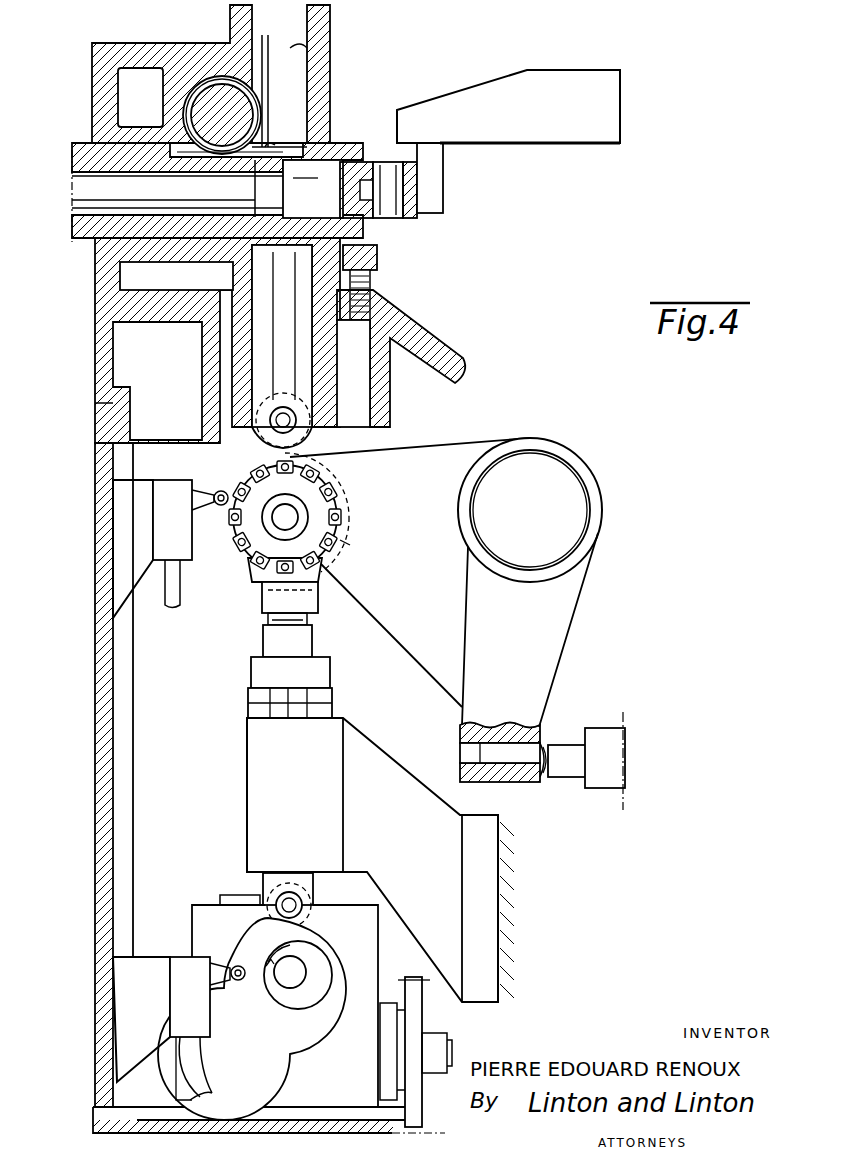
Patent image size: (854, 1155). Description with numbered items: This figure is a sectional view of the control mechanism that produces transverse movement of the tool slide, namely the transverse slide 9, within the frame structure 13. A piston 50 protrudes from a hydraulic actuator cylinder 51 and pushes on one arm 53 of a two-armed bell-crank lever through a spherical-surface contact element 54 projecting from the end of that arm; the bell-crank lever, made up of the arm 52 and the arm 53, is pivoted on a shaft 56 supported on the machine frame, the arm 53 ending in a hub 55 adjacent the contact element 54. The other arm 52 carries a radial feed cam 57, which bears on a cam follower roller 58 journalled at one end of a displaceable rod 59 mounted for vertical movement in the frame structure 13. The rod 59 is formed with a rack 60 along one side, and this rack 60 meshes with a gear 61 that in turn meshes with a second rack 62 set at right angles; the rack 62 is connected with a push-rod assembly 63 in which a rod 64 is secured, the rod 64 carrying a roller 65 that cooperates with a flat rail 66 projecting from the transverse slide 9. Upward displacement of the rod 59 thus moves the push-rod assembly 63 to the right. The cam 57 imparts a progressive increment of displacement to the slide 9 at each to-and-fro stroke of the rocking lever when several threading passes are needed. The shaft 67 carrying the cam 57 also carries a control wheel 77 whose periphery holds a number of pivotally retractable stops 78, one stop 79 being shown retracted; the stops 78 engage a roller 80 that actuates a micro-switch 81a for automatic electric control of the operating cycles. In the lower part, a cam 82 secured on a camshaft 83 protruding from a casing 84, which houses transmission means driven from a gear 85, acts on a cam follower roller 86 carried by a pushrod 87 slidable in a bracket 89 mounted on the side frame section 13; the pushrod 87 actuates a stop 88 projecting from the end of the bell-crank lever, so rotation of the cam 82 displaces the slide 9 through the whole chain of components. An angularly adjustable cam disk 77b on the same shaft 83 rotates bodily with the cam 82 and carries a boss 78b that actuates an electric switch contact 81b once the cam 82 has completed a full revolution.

The transverse slide 9 is at (508, 106).
The frame structure 13 is at (97, 340).
The piston 50 is at (567, 761).
The hydraulic actuator cylinder 51 is at (606, 795).
The bell-crank lever arm 52 is at (445, 462).
The bell-crank lever arm 53 is at (556, 662).
The spherical-surface contact element 54 is at (546, 786).
The hub 55 is at (462, 781).
The shaft 56 is at (530, 510).
The radial feed cam 57 is at (258, 468).
The cam follower roller 58 is at (308, 438).
The displaceable rod 59 is at (282, 346).
The rack 60 is at (270, 70).
The gear 61 is at (205, 78).
The second rack 62 is at (270, 138).
The push-rod assembly 63 is at (72, 157).
The rod 64 is at (72, 196).
The roller 65 is at (378, 192).
The flat rail 66 is at (438, 160).
The shaft 67 is at (285, 522).
The control wheel 77 is at (344, 530).
The pivotally retractable stops 78 is at (343, 495).
The retracted stop 79 is at (330, 470).
The roller 80 is at (220, 506).
The micro-switch 81a is at (152, 549).
The electric switch contact 81b is at (162, 1028).
The cam 82 is at (271, 1030).
The camshaft 83 is at (300, 975).
The casing 84 is at (199, 932).
The gear 85 is at (415, 1010).
The cam follower roller 86 is at (308, 916).
The pushrod 87 is at (312, 650).
The stop 88 is at (262, 603).
The bracket 89 is at (372, 860).
The cam disk 77b is at (322, 998).
The boss 78b is at (243, 982).